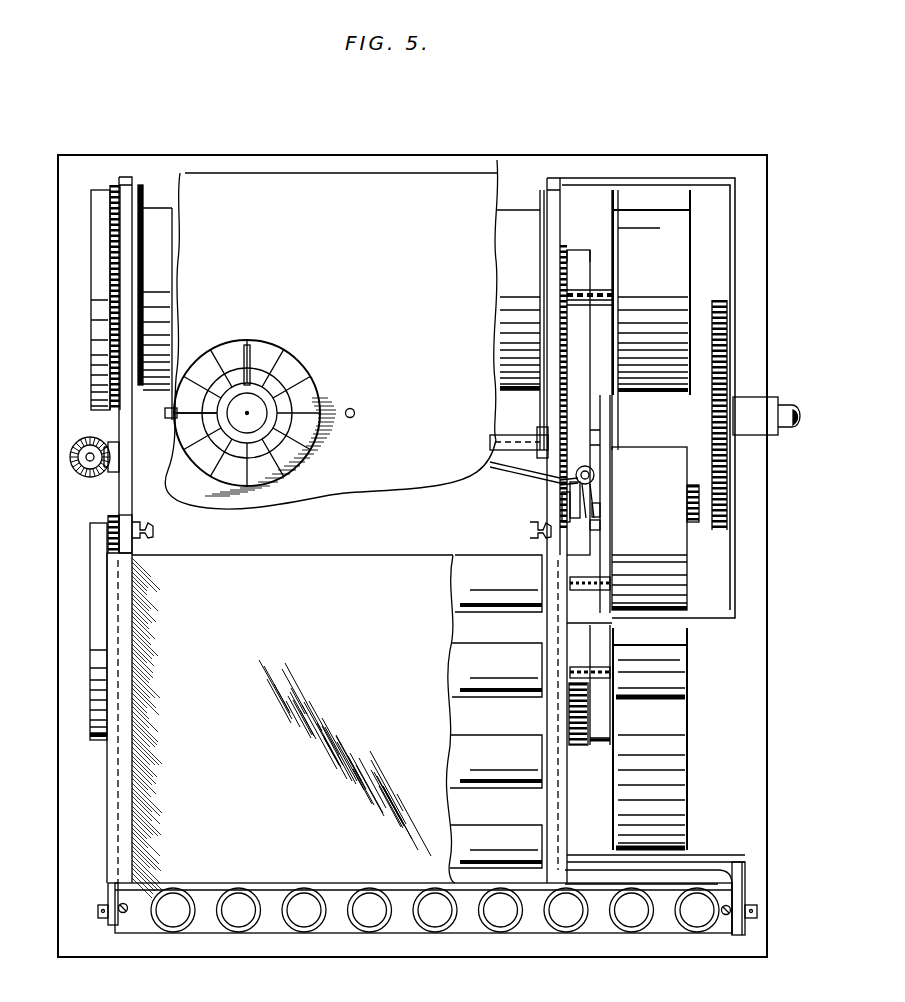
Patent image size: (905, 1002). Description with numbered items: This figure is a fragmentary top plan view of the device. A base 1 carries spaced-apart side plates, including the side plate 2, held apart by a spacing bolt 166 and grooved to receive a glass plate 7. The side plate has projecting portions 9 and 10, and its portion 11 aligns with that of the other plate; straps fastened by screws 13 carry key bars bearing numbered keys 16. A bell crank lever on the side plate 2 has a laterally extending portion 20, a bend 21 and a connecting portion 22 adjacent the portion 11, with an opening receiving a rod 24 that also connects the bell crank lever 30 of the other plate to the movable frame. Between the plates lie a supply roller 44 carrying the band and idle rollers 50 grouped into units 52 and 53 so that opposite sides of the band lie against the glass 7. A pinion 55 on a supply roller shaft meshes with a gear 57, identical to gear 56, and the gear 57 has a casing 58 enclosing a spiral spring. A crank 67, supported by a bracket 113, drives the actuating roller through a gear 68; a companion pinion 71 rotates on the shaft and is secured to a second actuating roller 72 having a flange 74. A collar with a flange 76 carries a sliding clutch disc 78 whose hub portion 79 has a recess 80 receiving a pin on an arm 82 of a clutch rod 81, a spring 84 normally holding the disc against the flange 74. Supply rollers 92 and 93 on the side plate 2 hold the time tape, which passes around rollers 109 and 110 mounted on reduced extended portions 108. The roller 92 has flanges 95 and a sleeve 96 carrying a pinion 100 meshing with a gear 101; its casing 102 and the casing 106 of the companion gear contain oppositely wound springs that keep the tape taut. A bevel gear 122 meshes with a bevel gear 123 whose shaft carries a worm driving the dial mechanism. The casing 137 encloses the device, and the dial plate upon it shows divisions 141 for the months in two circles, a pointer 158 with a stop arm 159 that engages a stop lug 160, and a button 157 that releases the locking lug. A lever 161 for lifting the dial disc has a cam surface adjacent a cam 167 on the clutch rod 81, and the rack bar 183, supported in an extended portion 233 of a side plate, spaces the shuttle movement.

The base 1 is at (103, 158).
The side plate 2 is at (548, 184).
The glass plate 7 is at (292, 575).
The projecting portion 9 is at (690, 870).
The projecting portion 10 is at (728, 874).
The projecting portion 11 is at (728, 888).
The screws or bolts 13 is at (123, 913).
The key 16 is at (180, 932).
The laterally extending portion 20 is at (585, 855).
The bend 21 is at (742, 862).
The connecting portion 22 is at (746, 930).
The rod 24 is at (100, 918).
The bell crank lever 30 is at (110, 893).
The supply roller 44 is at (178, 198).
The idle rollers 50 is at (480, 575).
The unit 52 is at (481, 640).
The unit 53 is at (482, 823).
The pinion 55 is at (112, 300).
The gear 56 is at (108, 540).
The gear 57 is at (112, 262).
The casing 58 is at (100, 229).
The crank 67 is at (793, 405).
The gear 68 is at (722, 345).
The companion pinion 71 is at (688, 484).
The second actuating roller 72 is at (670, 448).
The flange 74 is at (612, 436).
The flange 76 is at (570, 496).
The clutch disc 78 is at (606, 426).
The hub portion 79 is at (600, 525).
The recess 80 is at (600, 510).
The clutch rod 81 is at (594, 475).
The arm 82 is at (594, 494).
The spring 84 is at (562, 498).
The supply roller 92 is at (652, 212).
The supply roller 93 is at (678, 738).
The flanges 95 is at (608, 212).
The sleeve 96 is at (600, 298).
The pinion 100 is at (560, 296).
The gear 101 is at (578, 262).
The casing 102 is at (600, 246).
The casing 106 is at (590, 626).
The reduced extended portions 108 is at (580, 596).
The roller 109 is at (676, 592).
The roller 110 is at (670, 678).
The bracket 113 is at (736, 262).
The bevel gear 122 is at (86, 448).
The bevel gear 123 is at (108, 472).
The casing 137 is at (200, 195).
The divisions 141 is at (297, 383).
The button 157 is at (356, 413).
The pointer 158 is at (248, 345).
The stop arm 159 is at (178, 405).
The stop lug 160 is at (187, 475).
The lever 161 is at (508, 470).
The spacing bolt 166 is at (512, 436).
The cam 167 is at (590, 466).
The rack bar 183 is at (146, 533).
The extended portion 233 is at (128, 528).